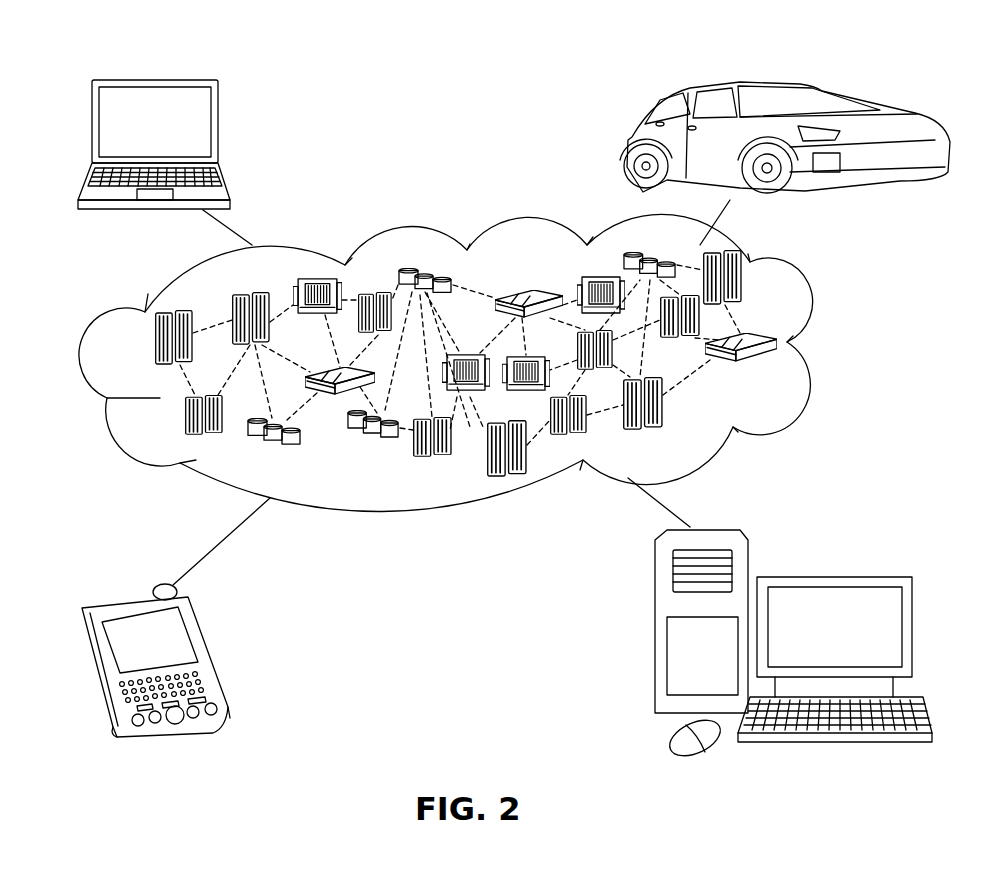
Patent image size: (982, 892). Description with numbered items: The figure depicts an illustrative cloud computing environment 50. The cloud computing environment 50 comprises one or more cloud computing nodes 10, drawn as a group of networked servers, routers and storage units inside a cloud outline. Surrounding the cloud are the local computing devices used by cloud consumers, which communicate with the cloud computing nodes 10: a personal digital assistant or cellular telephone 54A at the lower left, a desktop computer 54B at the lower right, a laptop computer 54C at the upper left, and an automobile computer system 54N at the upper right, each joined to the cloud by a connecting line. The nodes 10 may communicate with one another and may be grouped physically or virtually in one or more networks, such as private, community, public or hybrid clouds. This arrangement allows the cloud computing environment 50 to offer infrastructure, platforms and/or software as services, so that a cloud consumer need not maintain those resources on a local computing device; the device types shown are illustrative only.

The cloud computing node 10 is at (783, 370).
The cloud computing environment 50 is at (835, 343).
The personal digital assistant or cellular telephone 54A is at (210, 651).
The desktop computer 54B is at (832, 577).
The laptop computer 54C is at (219, 131).
The automobile computer system 54N is at (628, 140).